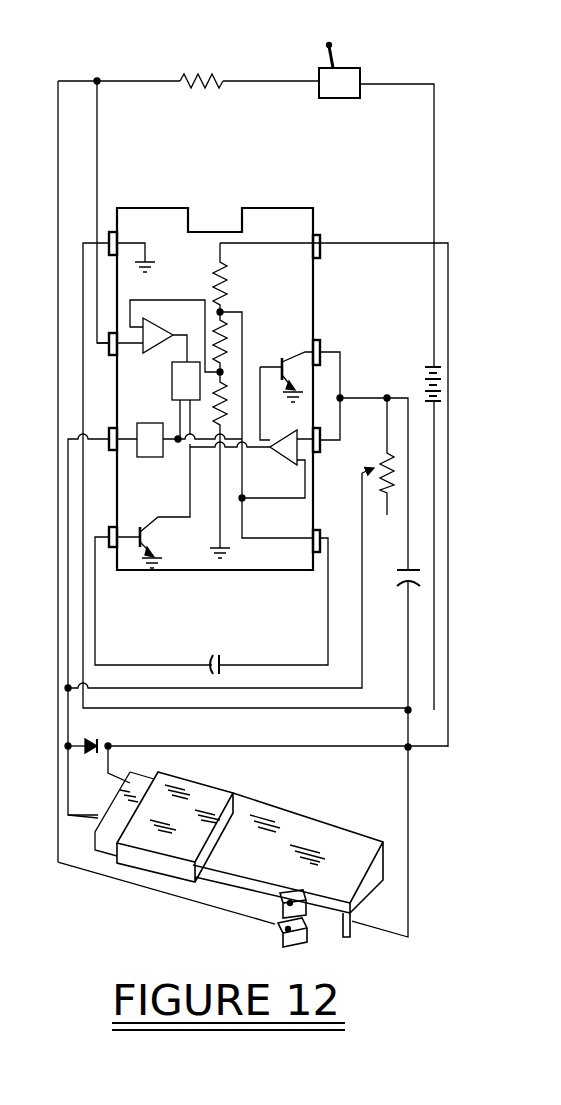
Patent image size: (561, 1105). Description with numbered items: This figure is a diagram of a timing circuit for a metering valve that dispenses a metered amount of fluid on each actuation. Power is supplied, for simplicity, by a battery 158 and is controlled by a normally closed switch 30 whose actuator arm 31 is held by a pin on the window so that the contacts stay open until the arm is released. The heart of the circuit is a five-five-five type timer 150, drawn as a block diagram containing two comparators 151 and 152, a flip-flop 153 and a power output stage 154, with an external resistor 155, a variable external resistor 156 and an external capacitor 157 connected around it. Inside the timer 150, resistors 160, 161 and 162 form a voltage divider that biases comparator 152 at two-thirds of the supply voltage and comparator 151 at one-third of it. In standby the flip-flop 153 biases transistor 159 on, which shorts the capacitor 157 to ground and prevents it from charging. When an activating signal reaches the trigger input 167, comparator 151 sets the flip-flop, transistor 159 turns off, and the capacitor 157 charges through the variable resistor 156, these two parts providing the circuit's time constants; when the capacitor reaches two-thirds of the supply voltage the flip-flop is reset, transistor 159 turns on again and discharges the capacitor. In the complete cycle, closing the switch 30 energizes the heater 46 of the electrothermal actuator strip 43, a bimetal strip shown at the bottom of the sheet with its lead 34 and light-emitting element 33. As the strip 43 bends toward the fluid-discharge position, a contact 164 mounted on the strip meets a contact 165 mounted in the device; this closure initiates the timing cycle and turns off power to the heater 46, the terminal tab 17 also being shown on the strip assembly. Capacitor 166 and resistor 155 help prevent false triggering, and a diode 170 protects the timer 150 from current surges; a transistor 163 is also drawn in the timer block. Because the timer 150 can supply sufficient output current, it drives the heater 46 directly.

The terminal tab 17 is at (351, 933).
The switch 30 is at (357, 75).
The actuator arm 31 is at (334, 52).
The light emitting element 33 is at (110, 765).
The conductor lead 34 is at (89, 822).
The electrothermal actuator strip 43 is at (258, 816).
The heater 46 is at (216, 792).
The 555 timer 150 is at (300, 212).
The comparator 151 is at (168, 342).
The comparator 152 is at (282, 452).
The flip-flop 153 is at (172, 395).
The power output stage 154 is at (148, 458).
The external resistor 155 is at (221, 80).
The variable external resistor 156 is at (384, 467).
The external capacitor 157 is at (406, 584).
The battery 158 is at (433, 368).
The transistor 159 is at (286, 364).
The resistor 160 is at (226, 283).
The resistor 161 is at (224, 335).
The resistor 162 is at (222, 400).
The transistor 163 is at (148, 560).
The contact 164 is at (278, 910).
The contact 165 is at (278, 938).
The capacitor 166 is at (219, 661).
The trigger input 167 is at (110, 344).
The diode 170 is at (96, 750).